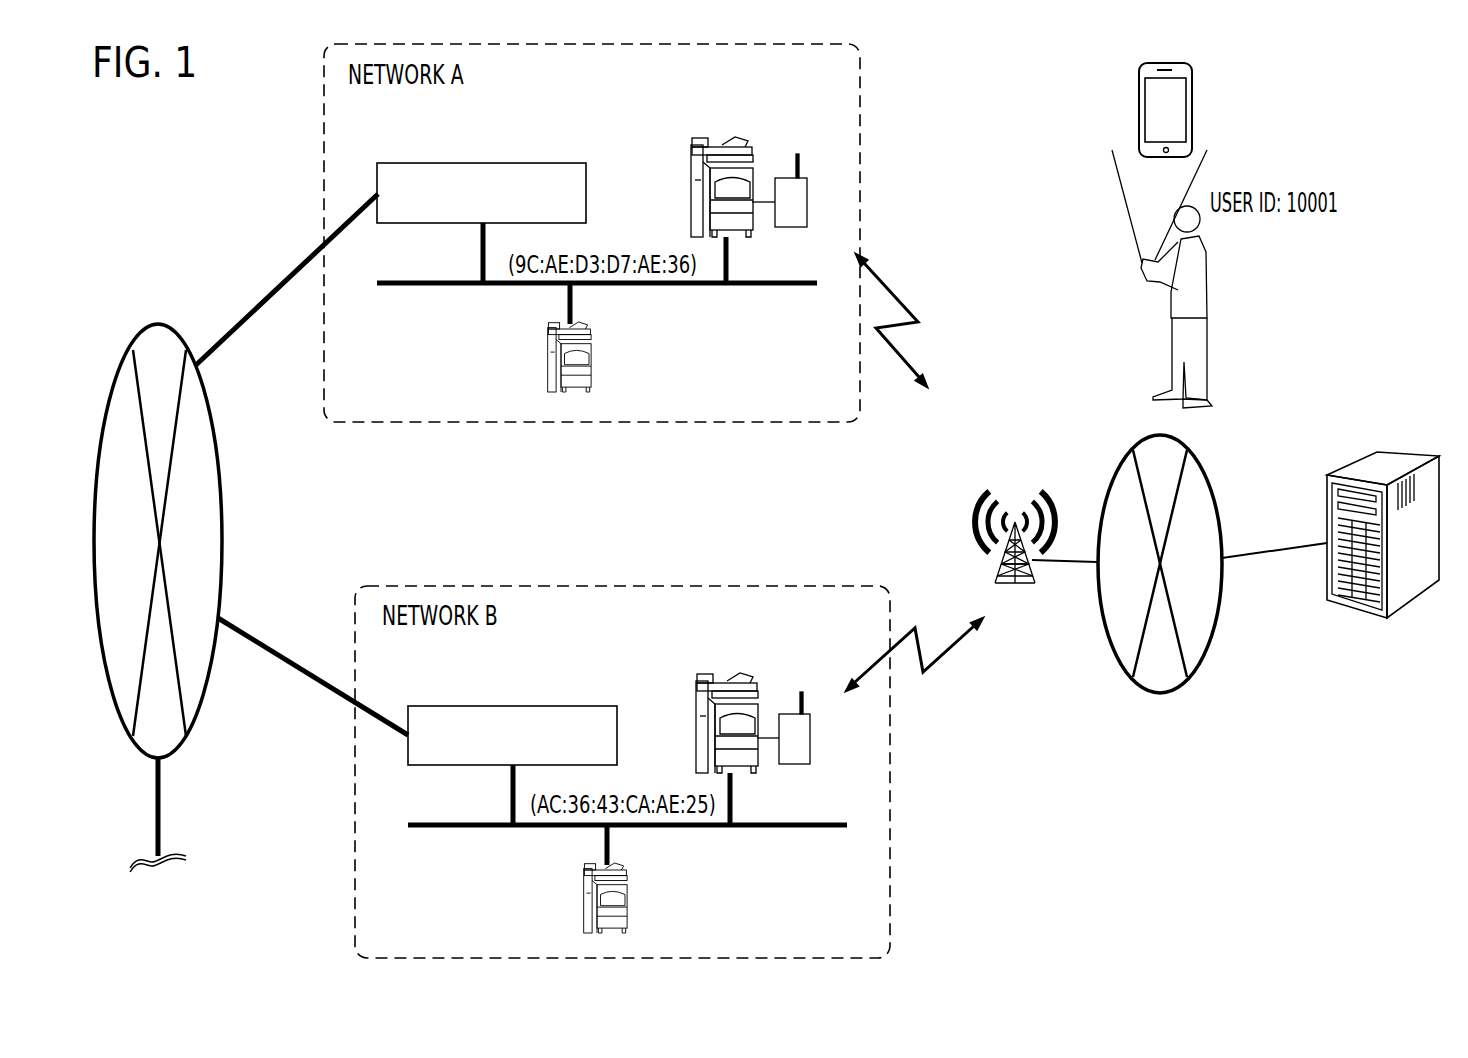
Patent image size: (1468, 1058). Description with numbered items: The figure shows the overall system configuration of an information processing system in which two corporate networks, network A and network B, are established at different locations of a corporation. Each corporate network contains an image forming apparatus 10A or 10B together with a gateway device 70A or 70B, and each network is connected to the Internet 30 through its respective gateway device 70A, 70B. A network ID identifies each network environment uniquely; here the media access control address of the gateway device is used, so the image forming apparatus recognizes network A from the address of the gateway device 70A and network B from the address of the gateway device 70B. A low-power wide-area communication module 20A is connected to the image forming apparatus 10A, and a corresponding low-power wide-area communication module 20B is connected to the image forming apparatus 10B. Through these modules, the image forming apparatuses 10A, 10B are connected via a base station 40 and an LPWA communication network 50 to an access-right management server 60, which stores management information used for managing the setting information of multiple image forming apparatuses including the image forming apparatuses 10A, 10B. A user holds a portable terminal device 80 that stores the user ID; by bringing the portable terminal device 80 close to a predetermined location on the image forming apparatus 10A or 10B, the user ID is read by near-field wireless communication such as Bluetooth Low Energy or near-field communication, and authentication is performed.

The Internet 30 is at (157, 324).
The gateway device 70A is at (489, 163).
The image forming apparatus 10A is at (740, 134).
The low-power wide-area communication module 20A is at (807, 198).
The gateway device 70B is at (521, 706).
The image forming apparatus 10B is at (745, 680).
The low-power wide-area communication module 20B is at (810, 737).
The base station 40 is at (996, 574).
The LPWA communication network 50 is at (1162, 693).
The access-right management server 60 is at (1390, 456).
The portable terminal device 80 is at (1192, 105).